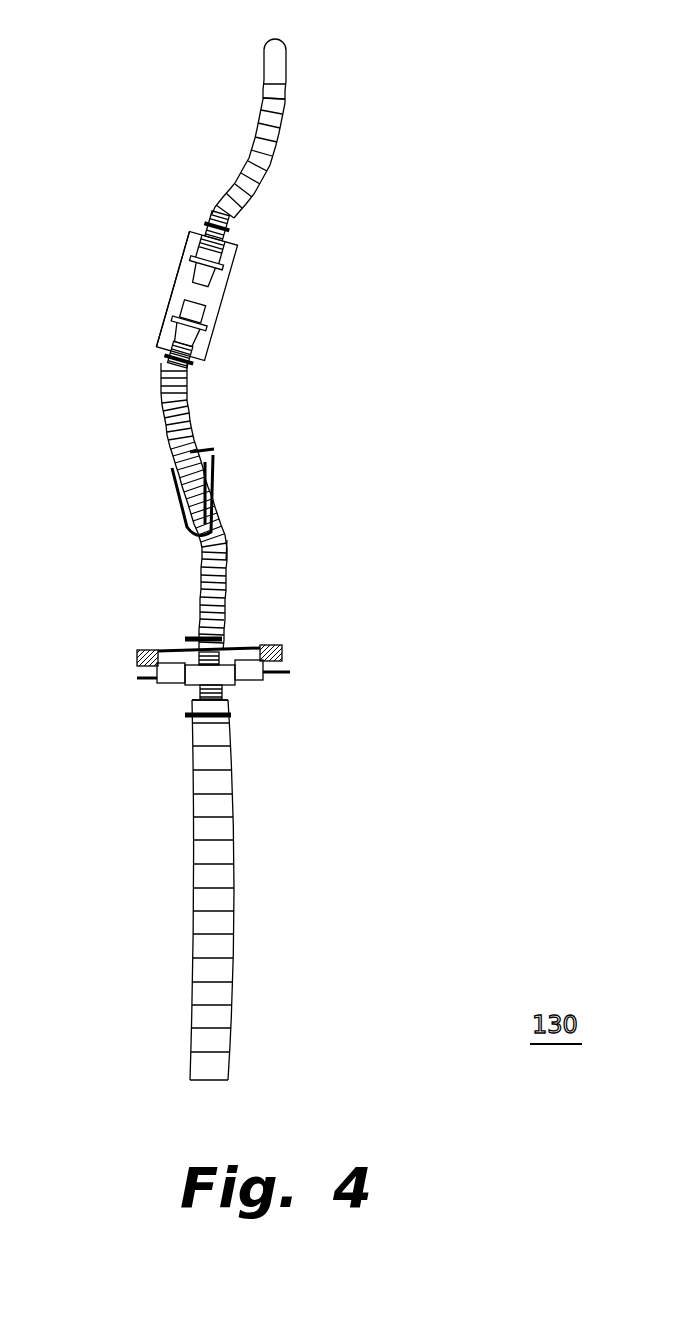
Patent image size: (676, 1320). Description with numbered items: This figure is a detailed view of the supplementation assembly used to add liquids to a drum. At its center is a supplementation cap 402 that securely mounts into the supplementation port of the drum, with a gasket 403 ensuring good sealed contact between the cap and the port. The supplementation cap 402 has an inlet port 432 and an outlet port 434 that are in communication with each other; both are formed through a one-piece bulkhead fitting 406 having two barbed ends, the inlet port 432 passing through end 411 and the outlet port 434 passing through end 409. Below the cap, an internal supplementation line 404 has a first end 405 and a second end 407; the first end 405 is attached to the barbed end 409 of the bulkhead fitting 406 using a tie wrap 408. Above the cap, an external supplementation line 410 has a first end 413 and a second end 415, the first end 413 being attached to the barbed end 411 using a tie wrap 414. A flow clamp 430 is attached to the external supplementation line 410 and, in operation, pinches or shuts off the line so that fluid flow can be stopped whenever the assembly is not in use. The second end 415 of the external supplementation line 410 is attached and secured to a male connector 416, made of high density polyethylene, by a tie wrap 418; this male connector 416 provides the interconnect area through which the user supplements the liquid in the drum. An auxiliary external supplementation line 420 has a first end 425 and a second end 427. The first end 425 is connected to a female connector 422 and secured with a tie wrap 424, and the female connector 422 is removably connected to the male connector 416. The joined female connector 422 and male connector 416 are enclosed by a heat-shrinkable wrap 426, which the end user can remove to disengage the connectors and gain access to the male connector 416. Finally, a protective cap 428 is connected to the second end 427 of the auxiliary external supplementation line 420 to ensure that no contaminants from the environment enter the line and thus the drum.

The supplementation cap 402 is at (298, 641).
The gasket 403 is at (266, 672).
The internal supplementation line 404 is at (248, 862).
The first end 405 is at (233, 768).
The bulkhead fitting 406 is at (165, 693).
The second end 407 is at (230, 1046).
The tie wrap 408 is at (233, 716).
The end 409 is at (228, 697).
The external supplementation line 410 is at (200, 412).
The end 411 is at (217, 658).
The first end 413 is at (229, 549).
The tie wrap 414 is at (221, 640).
The second end 415 is at (162, 380).
The male connector 416 is at (170, 311).
The tie wrap 418 is at (160, 360).
The auxiliary external supplementation line 420 is at (286, 160).
The female connector 422 is at (192, 273).
The tie wrap 424 is at (200, 222).
The first end 425 is at (236, 212).
The heat-shrinkable wrap 426 is at (229, 300).
The second end 427 is at (285, 96).
The protective cap 428 is at (289, 50).
The flow clamp 430 is at (171, 472).
The inlet port 432 is at (178, 630).
The outlet port 434 is at (174, 728).